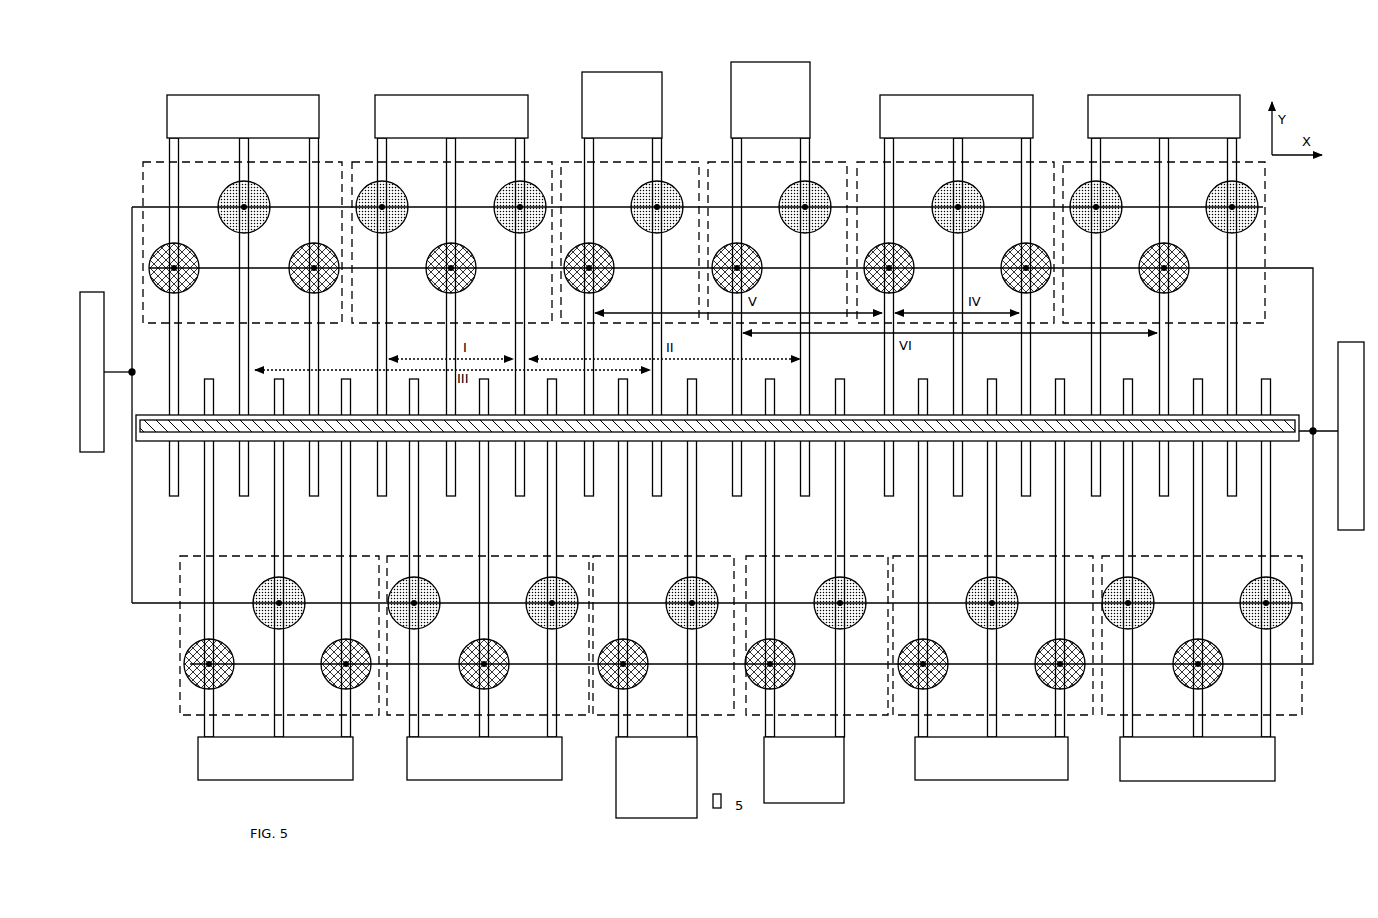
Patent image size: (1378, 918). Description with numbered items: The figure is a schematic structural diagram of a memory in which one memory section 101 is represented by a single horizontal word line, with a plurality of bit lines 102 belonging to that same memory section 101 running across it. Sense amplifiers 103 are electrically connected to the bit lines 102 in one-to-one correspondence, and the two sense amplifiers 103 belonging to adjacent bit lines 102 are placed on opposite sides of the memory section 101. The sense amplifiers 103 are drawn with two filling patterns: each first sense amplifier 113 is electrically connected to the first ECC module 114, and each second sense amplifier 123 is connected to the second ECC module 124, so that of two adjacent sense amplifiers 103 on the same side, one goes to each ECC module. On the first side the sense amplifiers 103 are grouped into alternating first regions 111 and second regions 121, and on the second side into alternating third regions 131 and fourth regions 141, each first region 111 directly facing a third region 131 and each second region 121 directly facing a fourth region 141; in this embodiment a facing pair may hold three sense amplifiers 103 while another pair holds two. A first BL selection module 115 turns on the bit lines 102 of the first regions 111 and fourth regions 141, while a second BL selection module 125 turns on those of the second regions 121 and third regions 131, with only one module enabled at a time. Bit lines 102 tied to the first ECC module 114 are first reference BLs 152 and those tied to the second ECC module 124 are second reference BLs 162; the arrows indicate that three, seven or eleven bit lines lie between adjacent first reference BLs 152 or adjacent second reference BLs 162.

The memory section 101 is at (148, 444).
The bit line 102 is at (150, 370).
The sense amplifier 103 is at (746, 237).
The first region 111 is at (154, 160).
The first sense amplifier 113 is at (1240, 215).
The first ECC module 114 is at (100, 292).
The first BL selection module 115 is at (167, 112).
The second region 121 is at (363, 161).
The second sense amplifier 123 is at (1168, 262).
The second ECC module 124 is at (1350, 342).
The second BL selection module 125 is at (375, 112).
The third region 131 is at (191, 555).
The fourth region 141 is at (470, 555).
The first reference BL 152 is at (247, 386).
The second reference BL 162 is at (317, 386).